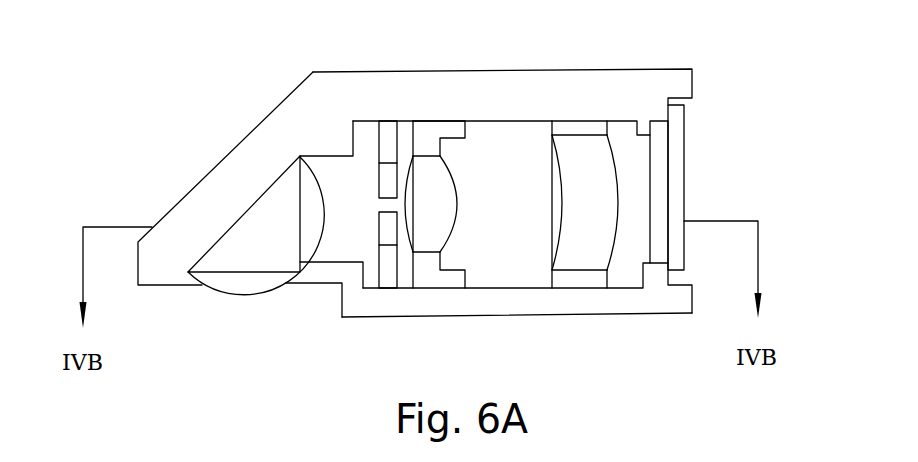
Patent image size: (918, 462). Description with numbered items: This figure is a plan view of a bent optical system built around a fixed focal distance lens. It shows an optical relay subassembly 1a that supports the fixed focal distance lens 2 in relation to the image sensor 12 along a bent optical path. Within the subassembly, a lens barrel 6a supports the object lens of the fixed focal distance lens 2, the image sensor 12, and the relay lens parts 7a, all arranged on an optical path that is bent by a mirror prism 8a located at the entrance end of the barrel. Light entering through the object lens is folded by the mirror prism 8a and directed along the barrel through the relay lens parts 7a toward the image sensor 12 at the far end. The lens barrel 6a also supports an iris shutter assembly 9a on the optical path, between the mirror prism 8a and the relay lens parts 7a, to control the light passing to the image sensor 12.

The optical relay subassembly 1a is at (579, 50).
The fixed focal distance lens 2 is at (270, 113).
The lens barrel 6a is at (505, 303).
The relay lens parts 7a is at (458, 202).
The mirror prism 8a is at (262, 220).
The iris shutter assembly 9a is at (388, 130).
The image sensor 12 is at (684, 120).